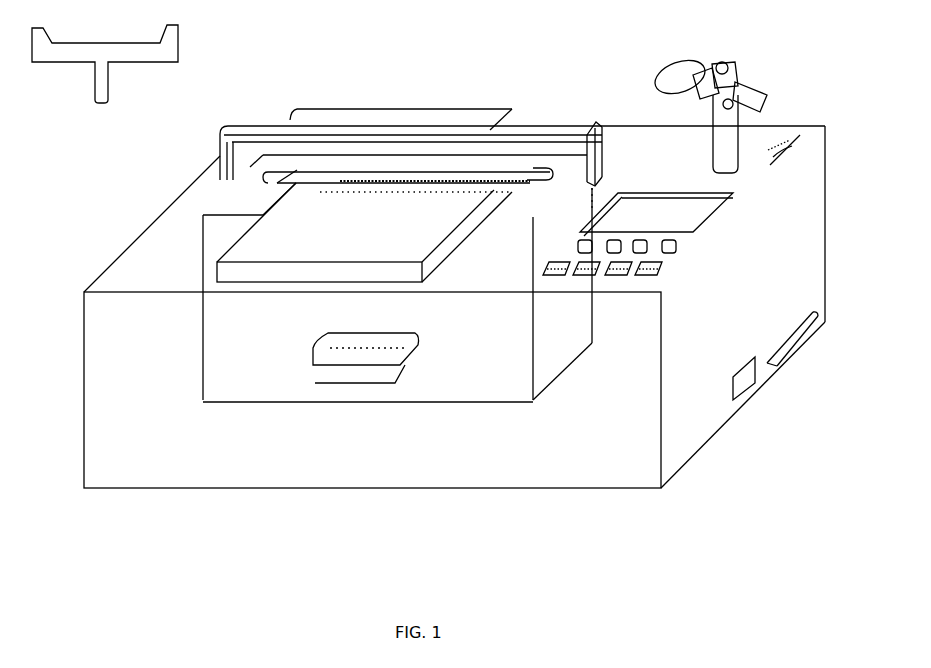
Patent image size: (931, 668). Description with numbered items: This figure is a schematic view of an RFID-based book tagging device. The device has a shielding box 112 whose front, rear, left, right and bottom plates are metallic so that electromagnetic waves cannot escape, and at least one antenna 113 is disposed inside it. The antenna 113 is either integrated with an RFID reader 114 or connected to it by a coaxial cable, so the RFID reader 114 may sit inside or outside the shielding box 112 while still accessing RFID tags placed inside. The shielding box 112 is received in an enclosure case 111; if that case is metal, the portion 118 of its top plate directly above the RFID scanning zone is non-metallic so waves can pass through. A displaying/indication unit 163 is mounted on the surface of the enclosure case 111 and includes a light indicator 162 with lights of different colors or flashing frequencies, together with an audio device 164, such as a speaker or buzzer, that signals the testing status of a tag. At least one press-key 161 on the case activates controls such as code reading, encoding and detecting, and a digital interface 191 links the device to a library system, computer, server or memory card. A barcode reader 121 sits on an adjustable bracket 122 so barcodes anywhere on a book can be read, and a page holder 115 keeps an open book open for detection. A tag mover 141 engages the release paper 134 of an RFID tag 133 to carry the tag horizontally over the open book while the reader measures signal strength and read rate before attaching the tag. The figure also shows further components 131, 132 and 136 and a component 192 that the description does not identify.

The enclosure case 111 is at (647, 455).
The shielding box 112 is at (192, 311).
The antenna 113 is at (299, 357).
The RFID reader 114 is at (302, 374).
The page holder 115 is at (210, 132).
The portion of top plate 118 is at (199, 215).
The barcode reader 121 is at (687, 50).
The adjustable bracket 122 is at (749, 124).
The top plate 131 is at (356, 108).
The plate 132 is at (385, 178).
The RFID tag 133 is at (431, 167).
The release paper 134 is at (511, 165).
The edge 136 is at (229, 201).
The tag mover 141 is at (92, 114).
The press-key 161 is at (680, 264).
The light indicator 162 is at (694, 246).
The displaying/indication unit 163 is at (693, 213).
The audio device 164 is at (787, 128).
The digital interface 191 is at (757, 394).
The slot 192 is at (810, 339).